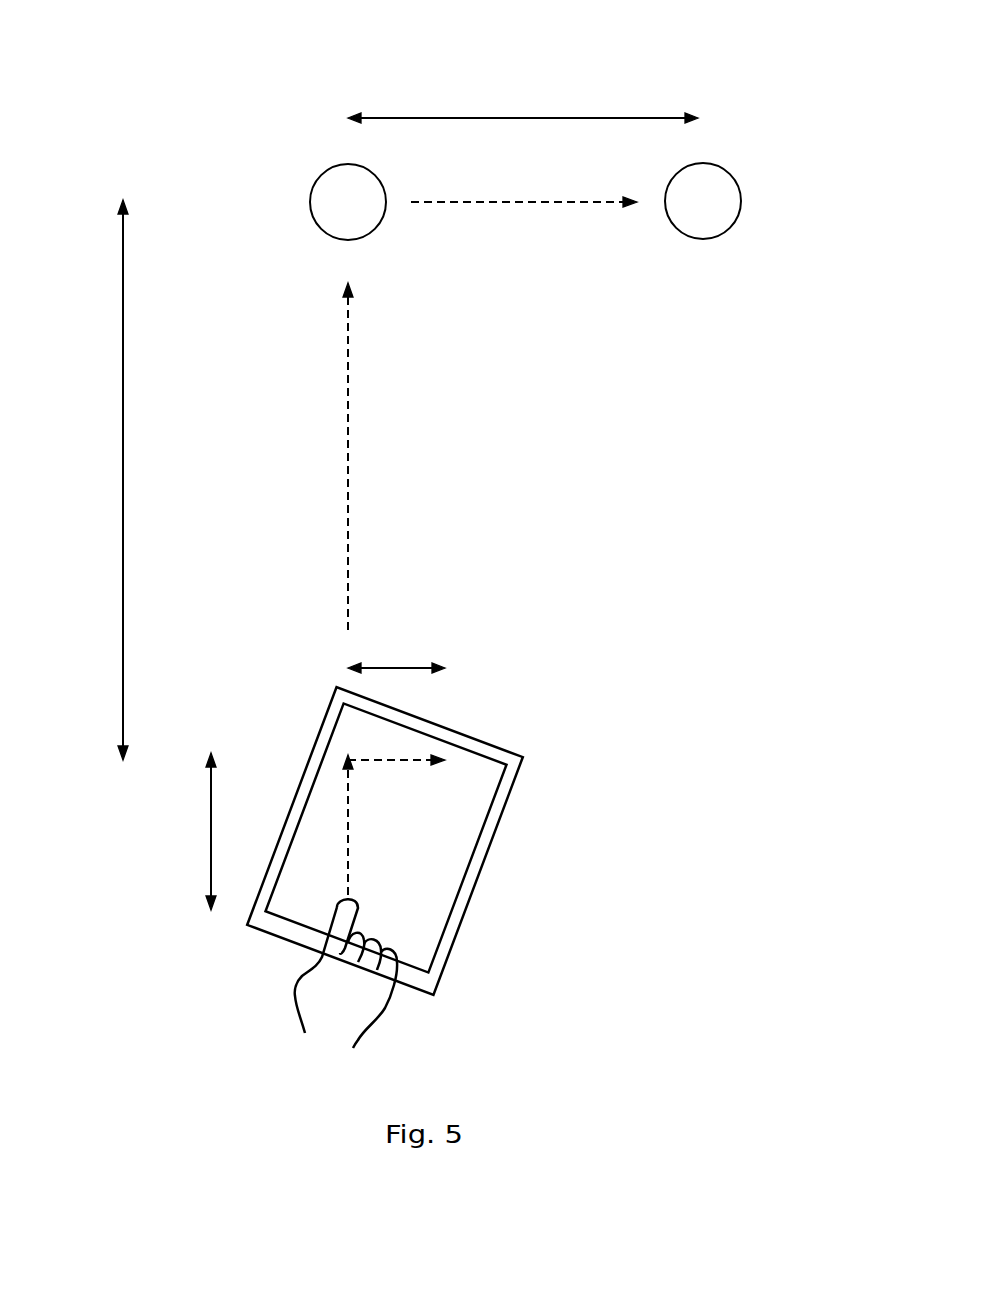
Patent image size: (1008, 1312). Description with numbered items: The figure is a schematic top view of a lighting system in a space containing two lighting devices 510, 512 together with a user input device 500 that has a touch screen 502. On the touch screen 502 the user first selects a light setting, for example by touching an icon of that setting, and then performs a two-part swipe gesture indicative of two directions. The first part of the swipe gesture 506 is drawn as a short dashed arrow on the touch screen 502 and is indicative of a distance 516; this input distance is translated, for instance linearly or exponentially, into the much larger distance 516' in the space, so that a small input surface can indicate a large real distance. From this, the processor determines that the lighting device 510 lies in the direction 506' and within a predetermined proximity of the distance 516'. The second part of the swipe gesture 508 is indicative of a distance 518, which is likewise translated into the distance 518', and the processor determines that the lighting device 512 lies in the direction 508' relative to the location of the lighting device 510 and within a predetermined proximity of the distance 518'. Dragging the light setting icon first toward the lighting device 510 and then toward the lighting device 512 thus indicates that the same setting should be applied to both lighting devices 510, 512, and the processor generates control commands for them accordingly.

The user input device 500 is at (445, 960).
The touch screen 502 is at (436, 913).
The first part of the swipe gesture 506 is at (406, 825).
The direction 506' is at (415, 456).
The second part of the swipe gesture 508 is at (431, 720).
The direction 508' is at (524, 260).
The lighting device 510 is at (363, 226).
The lighting device 512 is at (718, 226).
The distance 516 is at (141, 831).
The translated distance 516' is at (189, 480).
The distance 518 is at (431, 629).
The translated distance 518' is at (523, 64).